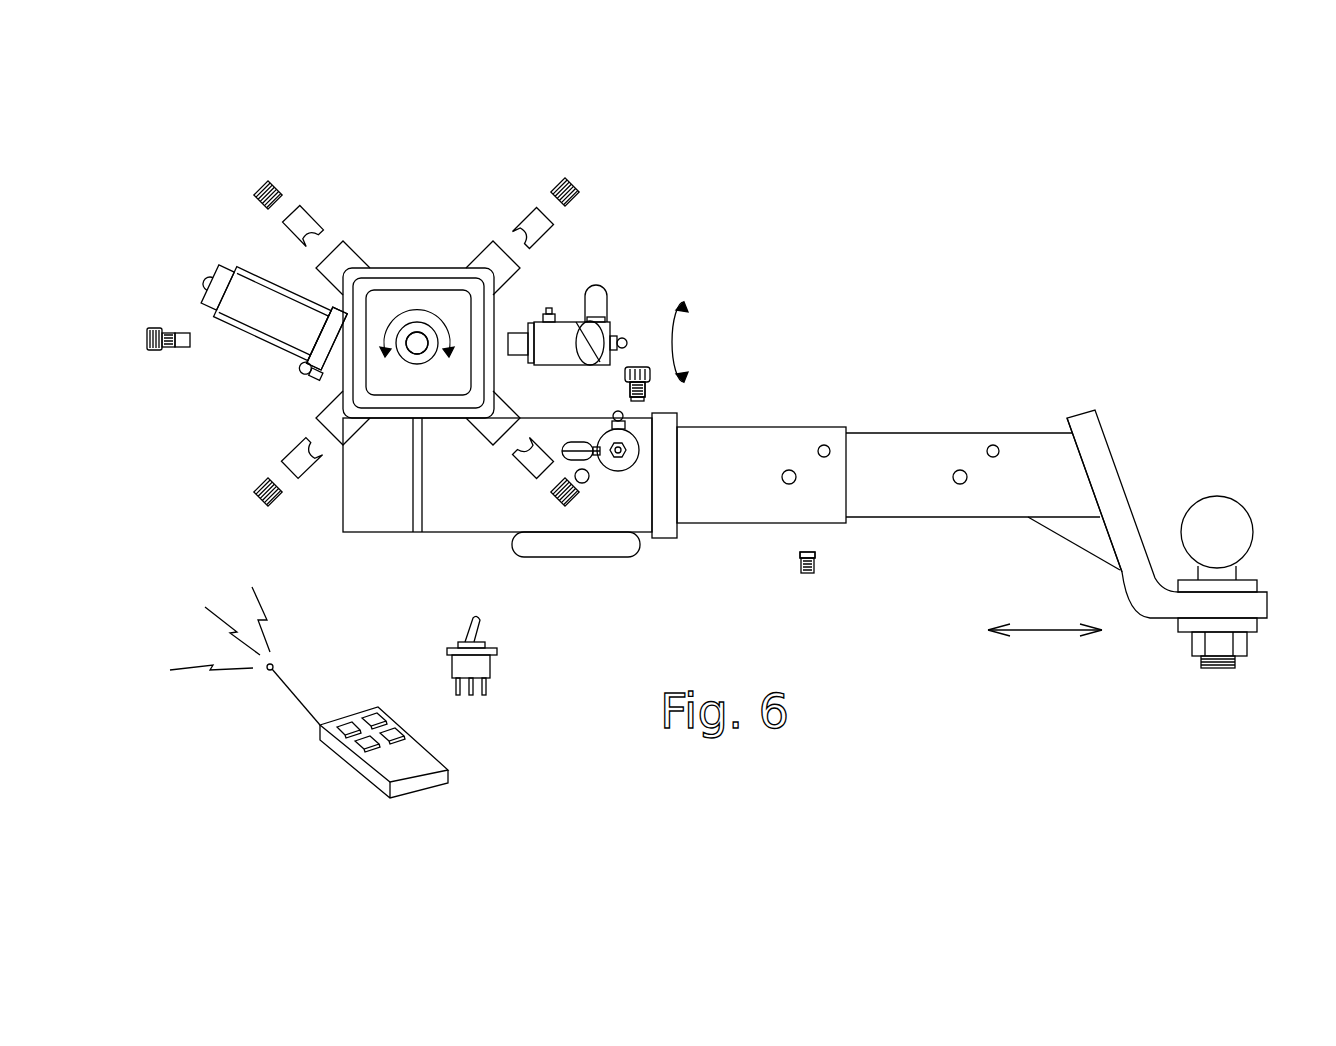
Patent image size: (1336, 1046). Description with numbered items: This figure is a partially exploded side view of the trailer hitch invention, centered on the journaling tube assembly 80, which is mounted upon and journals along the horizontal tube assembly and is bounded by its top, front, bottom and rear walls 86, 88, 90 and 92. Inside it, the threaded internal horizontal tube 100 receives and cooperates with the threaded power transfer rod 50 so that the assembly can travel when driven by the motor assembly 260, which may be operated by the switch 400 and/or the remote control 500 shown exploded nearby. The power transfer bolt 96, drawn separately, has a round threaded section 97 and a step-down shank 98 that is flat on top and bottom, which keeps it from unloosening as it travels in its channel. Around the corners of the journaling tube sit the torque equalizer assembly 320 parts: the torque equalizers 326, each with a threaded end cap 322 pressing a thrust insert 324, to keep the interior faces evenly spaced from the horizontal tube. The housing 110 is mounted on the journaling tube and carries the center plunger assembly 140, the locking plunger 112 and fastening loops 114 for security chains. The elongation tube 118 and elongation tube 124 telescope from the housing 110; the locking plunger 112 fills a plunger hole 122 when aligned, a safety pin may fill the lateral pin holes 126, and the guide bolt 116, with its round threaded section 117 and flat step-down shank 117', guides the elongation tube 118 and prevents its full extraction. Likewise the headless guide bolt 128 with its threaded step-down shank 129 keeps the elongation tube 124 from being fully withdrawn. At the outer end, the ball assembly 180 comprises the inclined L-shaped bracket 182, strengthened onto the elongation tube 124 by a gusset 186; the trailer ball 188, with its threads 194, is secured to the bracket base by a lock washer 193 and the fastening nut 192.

The threaded power transfer rod 50 is at (342, 403).
The journaling tube assembly 80 is at (427, 270).
The top wall 86 is at (445, 270).
The front wall 88 is at (500, 310).
The bottom wall 90 is at (439, 420).
The rear wall 92 is at (343, 337).
The power transfer bolt 96 is at (148, 347).
The threaded section 97 is at (170, 327).
The step-down shank 98 is at (181, 348).
The threaded internal horizontal tube 100 is at (418, 363).
The housing 110 is at (465, 500).
The locking plunger 112 is at (627, 470).
The fastening loops 114 is at (537, 545).
The guide bolt 116 is at (638, 366).
The threaded section 117 is at (586, 386).
The step-down shank 117' is at (703, 397).
The elongation tube 118 is at (700, 490).
The plunger hole 122 is at (823, 445).
The elongation tube 124 is at (880, 490).
The pin holes 126 is at (584, 483).
The headless guide bolt 128 is at (806, 574).
The threaded step-down shank 129 is at (817, 552).
The center plunger assembly 140 is at (609, 299).
The ball assembly 180 is at (1110, 448).
The bracket 182 is at (1125, 492).
The gusset 186 is at (1073, 547).
The trailer ball 188 is at (1242, 505).
The fastening nut 192 is at (1245, 648).
The washer 193 is at (1258, 627).
The threads 194 is at (1213, 668).
The motor assembly 260 is at (258, 272).
The torque equalizer assembly 320 is at (343, 247).
The threaded end cap 322 is at (256, 198).
The thrust insert 324 is at (322, 218).
The torque equalizers 326 is at (357, 270).
The switch 400 is at (445, 652).
The remote control 500 is at (420, 790).